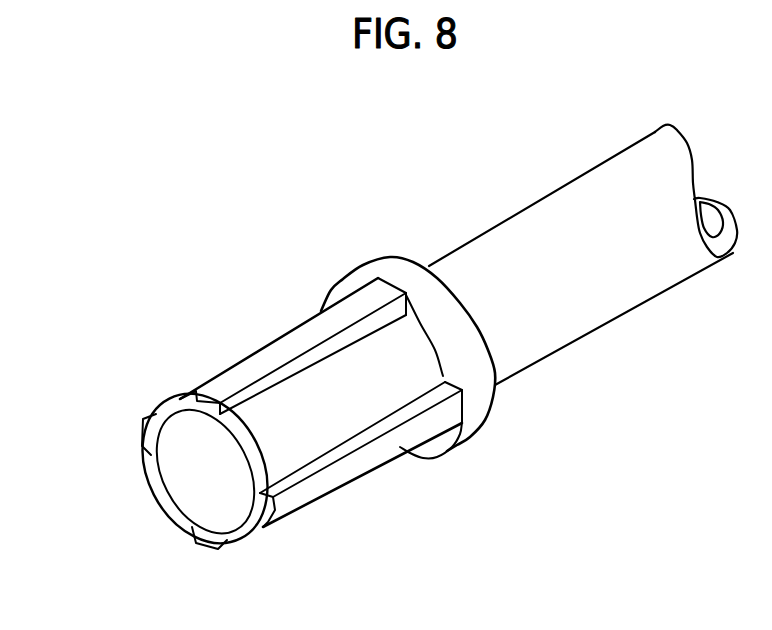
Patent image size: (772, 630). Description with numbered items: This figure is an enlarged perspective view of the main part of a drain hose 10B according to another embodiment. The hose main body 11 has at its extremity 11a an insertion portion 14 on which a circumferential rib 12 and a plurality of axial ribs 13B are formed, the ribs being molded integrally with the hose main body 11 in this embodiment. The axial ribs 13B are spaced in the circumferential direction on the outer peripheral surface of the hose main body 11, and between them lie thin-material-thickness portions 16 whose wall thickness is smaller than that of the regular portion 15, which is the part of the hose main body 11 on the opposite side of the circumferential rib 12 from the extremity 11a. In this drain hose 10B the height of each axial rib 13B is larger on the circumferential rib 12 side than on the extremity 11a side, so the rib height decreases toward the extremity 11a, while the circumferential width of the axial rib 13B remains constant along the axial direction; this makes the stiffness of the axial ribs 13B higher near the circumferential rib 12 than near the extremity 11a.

The drain hose 10B is at (192, 305).
The hose main body 11 is at (646, 136).
The extremity 11a is at (190, 510).
The circumferential rib 12 is at (410, 258).
The axial rib 13B is at (278, 352).
The insertion portion 14 is at (364, 268).
The regular portion 15 is at (593, 187).
The thin-material-thickness portion 16 is at (190, 398).